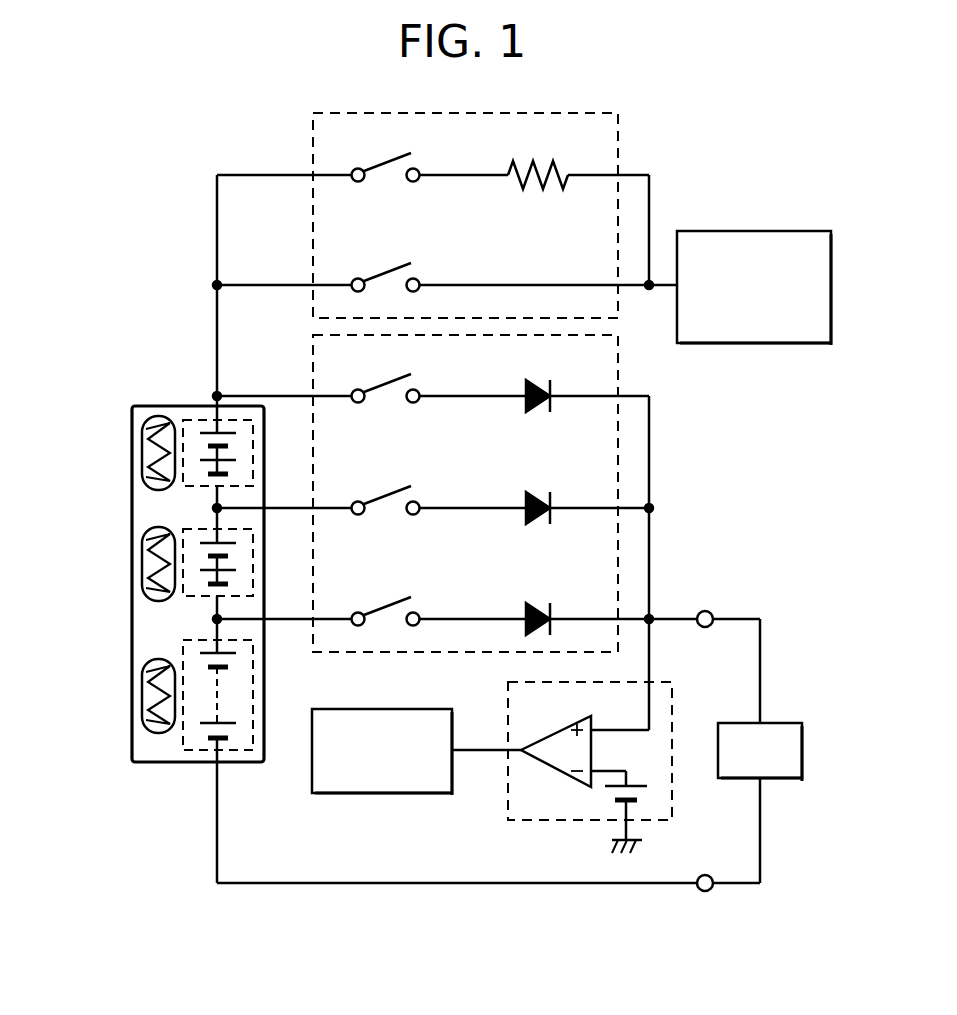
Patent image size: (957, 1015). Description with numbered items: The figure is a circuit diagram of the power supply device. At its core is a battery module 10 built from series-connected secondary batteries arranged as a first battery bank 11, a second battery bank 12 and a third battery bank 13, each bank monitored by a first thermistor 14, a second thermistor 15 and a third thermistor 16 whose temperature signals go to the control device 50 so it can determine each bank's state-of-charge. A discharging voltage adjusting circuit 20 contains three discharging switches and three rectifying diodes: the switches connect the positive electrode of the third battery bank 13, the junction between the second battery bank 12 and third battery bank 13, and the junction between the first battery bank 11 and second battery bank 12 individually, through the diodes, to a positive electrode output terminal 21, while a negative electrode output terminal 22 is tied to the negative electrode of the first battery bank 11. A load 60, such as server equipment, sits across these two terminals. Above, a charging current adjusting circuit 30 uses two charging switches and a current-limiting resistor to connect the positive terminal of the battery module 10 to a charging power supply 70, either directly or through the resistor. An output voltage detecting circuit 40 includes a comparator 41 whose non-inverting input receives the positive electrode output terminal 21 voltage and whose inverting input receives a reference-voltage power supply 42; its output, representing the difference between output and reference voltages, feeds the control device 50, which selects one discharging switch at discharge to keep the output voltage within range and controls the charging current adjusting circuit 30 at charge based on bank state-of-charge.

The battery module 10 is at (165, 406).
The first battery bank 11 is at (254, 673).
The second battery bank 12 is at (254, 547).
The third battery bank 13 is at (254, 437).
The first thermistor 14 is at (142, 697).
The second thermistor 15 is at (142, 565).
The third thermistor 16 is at (142, 454).
The discharging voltage adjusting circuit 20 is at (620, 381).
The positive electrode output terminal 21 is at (706, 611).
The negative electrode output terminal 22 is at (704, 891).
The charging current adjusting circuit 30 is at (620, 128).
The output voltage detecting circuit 40 is at (625, 771).
The comparator 41 is at (560, 774).
The reference-voltage power supply 42 is at (648, 794).
The control device 50 is at (428, 795).
The load 60 is at (797, 723).
The charging power supply 70 is at (806, 231).